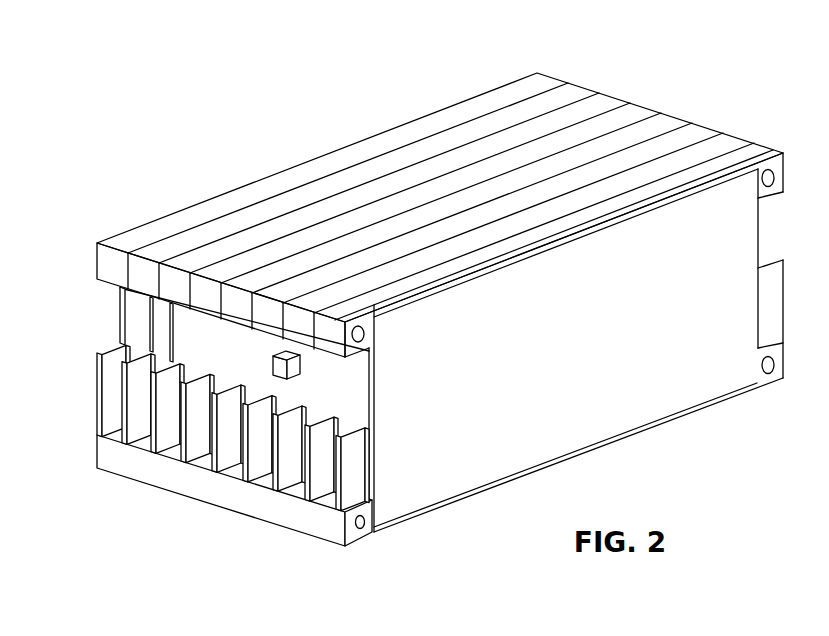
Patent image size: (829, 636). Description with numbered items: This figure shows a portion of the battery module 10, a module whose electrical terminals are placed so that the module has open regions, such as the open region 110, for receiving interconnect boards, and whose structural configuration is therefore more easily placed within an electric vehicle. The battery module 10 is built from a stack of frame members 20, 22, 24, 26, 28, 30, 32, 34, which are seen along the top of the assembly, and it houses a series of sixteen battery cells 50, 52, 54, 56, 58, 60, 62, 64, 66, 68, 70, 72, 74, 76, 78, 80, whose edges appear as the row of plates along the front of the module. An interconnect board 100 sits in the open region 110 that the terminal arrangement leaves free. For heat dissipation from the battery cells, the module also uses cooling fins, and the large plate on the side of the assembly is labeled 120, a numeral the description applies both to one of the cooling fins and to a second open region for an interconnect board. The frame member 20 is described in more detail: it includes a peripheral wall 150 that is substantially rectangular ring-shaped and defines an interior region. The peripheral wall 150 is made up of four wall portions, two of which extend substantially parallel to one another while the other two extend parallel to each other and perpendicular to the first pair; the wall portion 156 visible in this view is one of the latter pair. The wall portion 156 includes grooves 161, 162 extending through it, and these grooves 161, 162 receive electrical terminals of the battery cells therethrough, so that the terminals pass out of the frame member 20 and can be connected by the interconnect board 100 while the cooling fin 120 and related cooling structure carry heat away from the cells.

The battery module 10 is at (690, 47).
The frame member 20 is at (542, 78).
The frame member 22 is at (573, 88).
The frame member 24 is at (604, 98).
The frame member 26 is at (635, 108).
The frame member 28 is at (666, 118).
The frame member 30 is at (697, 128).
The frame member 32 is at (728, 138).
The frame member 34 is at (759, 148).
The battery cell 50 is at (104, 418).
The battery cell 52 is at (113, 441).
The battery cell 54 is at (124, 447).
The battery cell 56 is at (138, 452).
The battery cell 58 is at (152, 456).
The battery cell 60 is at (167, 460).
The battery cell 62 is at (182, 463).
The battery cell 64 is at (197, 455).
The battery cell 66 is at (213, 458).
The battery cell 68 is at (235, 470).
The battery cell 70 is at (258, 470).
The battery cell 72 is at (272, 475).
The battery cell 74 is at (290, 477).
The battery cell 76 is at (303, 478).
The battery cell 78 is at (320, 487).
The battery cell 80 is at (347, 487).
The interconnect board 100 is at (298, 378).
The open region 110 is at (106, 296).
The cooling fin 120 is at (776, 226).
The peripheral wall 150 is at (372, 148).
The third wall portion 156 is at (124, 306).
The groove 161 is at (127, 343).
The groove 162 is at (143, 347).